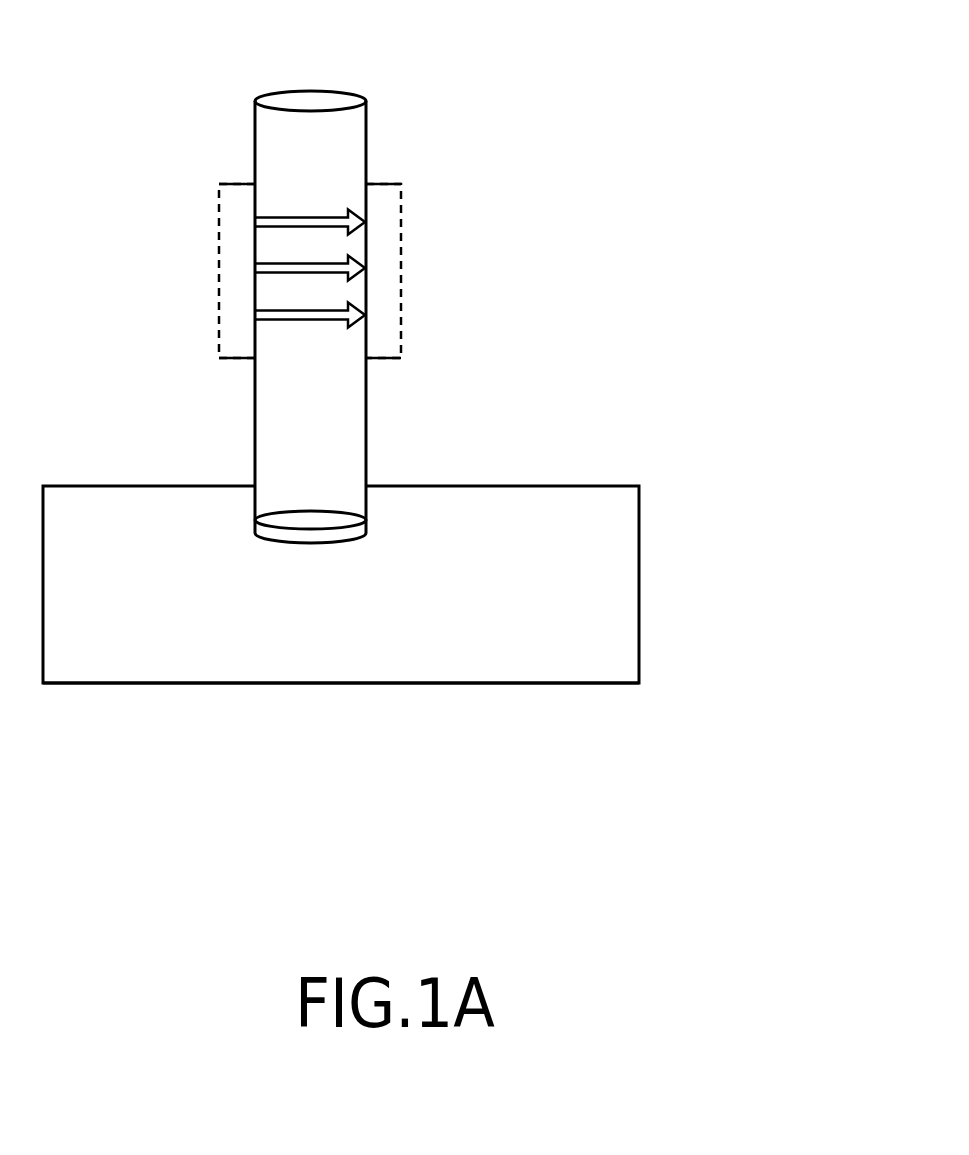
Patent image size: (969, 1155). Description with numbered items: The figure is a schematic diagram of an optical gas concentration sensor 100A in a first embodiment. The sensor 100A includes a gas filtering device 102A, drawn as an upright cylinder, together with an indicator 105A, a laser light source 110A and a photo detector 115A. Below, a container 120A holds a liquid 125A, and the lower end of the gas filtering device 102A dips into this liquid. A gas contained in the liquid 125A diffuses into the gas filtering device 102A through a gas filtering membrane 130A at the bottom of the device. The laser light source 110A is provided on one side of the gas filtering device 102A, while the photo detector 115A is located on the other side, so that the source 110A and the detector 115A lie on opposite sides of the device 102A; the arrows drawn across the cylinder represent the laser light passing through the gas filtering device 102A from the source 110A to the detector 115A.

The optical gas concentration sensor 100A is at (366, 102).
The gas filtering device 102A is at (255, 392).
The indicator 105A is at (347, 379).
The laser light source 110A is at (237, 282).
The photo detector 115A is at (388, 288).
The container 120A is at (639, 597).
The liquid 125A is at (472, 615).
The gas filtering membrane 130A is at (310, 546).